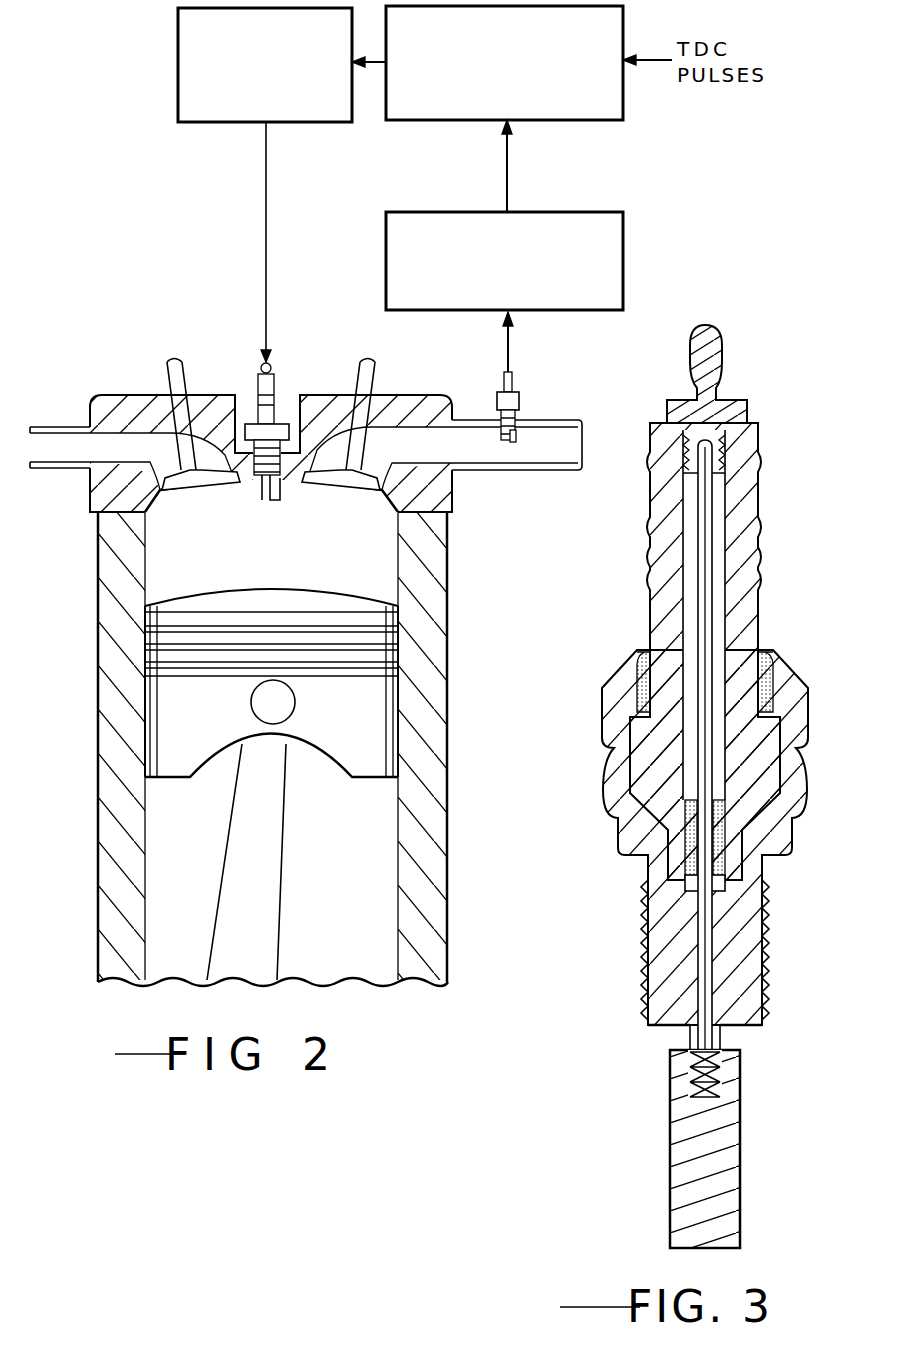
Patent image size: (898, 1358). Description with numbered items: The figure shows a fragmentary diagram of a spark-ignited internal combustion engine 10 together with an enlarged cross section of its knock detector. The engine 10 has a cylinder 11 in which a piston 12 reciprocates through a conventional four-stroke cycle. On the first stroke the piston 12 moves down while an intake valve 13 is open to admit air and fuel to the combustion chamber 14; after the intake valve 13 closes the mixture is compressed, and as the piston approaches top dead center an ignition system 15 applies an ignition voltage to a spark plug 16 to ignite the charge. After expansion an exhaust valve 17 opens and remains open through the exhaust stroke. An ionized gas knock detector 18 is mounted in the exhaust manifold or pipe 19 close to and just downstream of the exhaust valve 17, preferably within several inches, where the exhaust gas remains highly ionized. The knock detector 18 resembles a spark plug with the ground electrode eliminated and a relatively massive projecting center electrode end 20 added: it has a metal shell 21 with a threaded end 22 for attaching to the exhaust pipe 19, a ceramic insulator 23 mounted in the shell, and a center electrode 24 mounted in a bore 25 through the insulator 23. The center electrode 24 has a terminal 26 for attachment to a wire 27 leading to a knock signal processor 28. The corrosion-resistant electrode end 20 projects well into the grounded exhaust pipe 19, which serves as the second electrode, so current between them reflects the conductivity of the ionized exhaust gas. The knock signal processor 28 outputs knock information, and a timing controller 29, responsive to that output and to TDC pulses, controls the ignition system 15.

In FIG. 2, the internal combustion engine 10 is at (334, 784).
In FIG. 2, the cylinder 11 is at (98, 550).
In FIG. 2, the piston 12 is at (398, 680).
In FIG. 2, the intake valve 13 is at (165, 372).
In FIG. 2, the combustion chamber 14 is at (398, 572).
In FIG. 2, the ignition system 15 is at (178, 92).
In FIG. 2, the spark plug 16 is at (275, 380).
In FIG. 2, the exhaust valve 17 is at (380, 368).
In FIG. 2, the ionized gas knock detector 18 is at (516, 398).
In FIG. 3, the ionized gas knock detector 18 is at (728, 687).
In FIG. 2, the exhaust manifold or pipe 19 is at (470, 472).
In FIG. 2, the center electrode end 20 is at (516, 442).
In FIG. 3, the center electrode end 20 is at (742, 1140).
In FIG. 3, the metal shell 21 is at (808, 800).
In FIG. 3, the threaded end 22 is at (765, 942).
In FIG. 3, the ceramic insulator 23 is at (650, 620).
In FIG. 3, the center electrode 24 is at (762, 680).
In FIG. 3, the bore 25 is at (720, 622).
In FIG. 3, the terminal 26 is at (722, 336).
In FIG. 2, the wire 27 is at (512, 336).
In FIG. 2, the knock signal processor 28 is at (623, 258).
In FIG. 2, the timing controller 29 is at (623, 120).